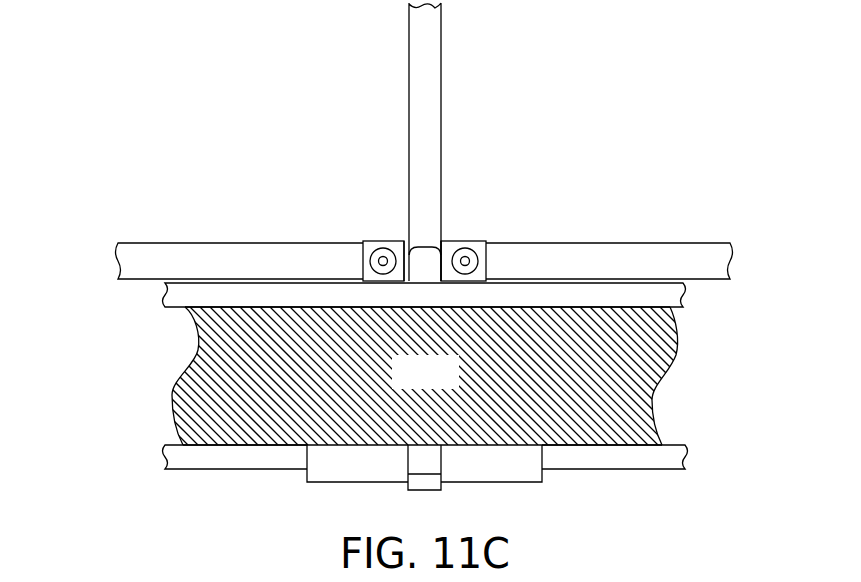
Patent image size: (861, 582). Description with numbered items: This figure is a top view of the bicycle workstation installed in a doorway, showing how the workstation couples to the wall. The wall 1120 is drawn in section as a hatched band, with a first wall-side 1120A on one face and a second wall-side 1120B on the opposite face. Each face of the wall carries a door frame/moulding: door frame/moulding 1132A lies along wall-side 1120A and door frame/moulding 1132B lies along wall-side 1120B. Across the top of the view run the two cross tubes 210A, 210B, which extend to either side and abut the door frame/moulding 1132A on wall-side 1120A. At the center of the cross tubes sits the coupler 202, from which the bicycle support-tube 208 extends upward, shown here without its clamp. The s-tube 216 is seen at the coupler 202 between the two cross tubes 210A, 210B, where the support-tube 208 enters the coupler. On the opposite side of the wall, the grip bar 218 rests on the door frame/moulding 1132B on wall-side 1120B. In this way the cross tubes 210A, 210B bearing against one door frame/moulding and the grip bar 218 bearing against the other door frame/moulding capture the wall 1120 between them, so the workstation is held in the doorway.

The bicycle support-tube 208 is at (427, 87).
The coupler 202 is at (383, 238).
The s-tube 216 is at (423, 265).
The cross tube 210A is at (608, 257).
The cross tube 210B is at (242, 257).
The wall 1120 is at (456, 386).
The wall-side 1120A is at (220, 317).
The wall-side 1120B is at (218, 435).
The door frame/moulding 1132A is at (618, 300).
The door frame/moulding 1132B is at (618, 453).
The grip bar 218 is at (453, 490).